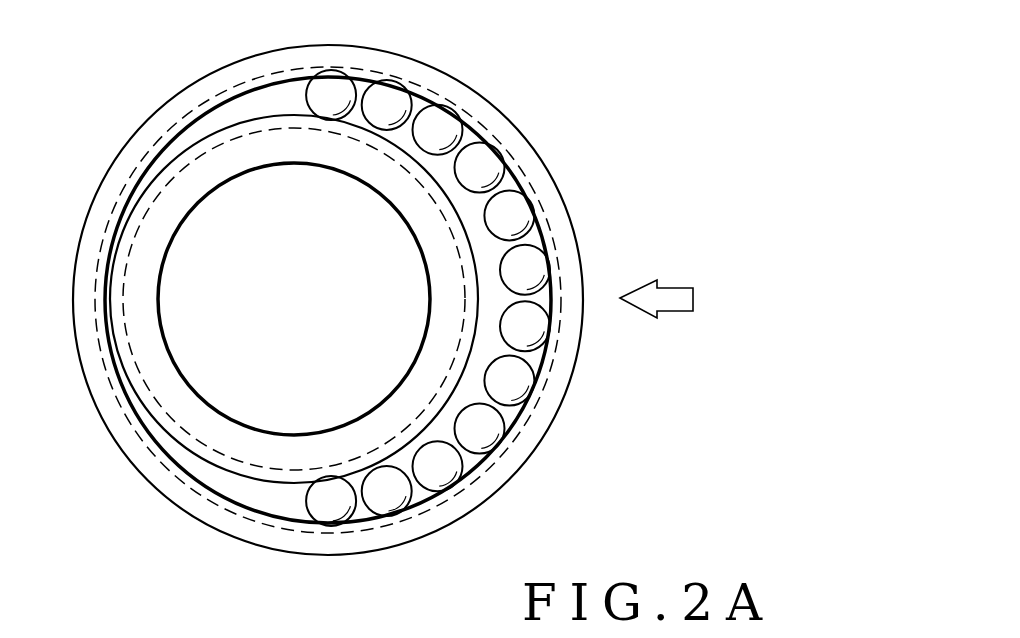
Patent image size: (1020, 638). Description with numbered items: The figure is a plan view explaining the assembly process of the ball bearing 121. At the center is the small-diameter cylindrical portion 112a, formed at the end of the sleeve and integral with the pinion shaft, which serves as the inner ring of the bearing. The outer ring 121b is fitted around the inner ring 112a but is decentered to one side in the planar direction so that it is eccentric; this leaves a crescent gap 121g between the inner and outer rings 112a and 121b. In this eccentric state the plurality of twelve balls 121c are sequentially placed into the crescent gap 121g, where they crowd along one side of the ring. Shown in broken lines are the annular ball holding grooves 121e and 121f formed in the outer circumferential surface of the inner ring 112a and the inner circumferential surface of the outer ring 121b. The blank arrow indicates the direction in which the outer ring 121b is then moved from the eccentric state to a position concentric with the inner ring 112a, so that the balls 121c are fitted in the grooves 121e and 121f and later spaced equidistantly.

The ball bearing 121 is at (404, 284).
The outer ring 121b is at (472, 97).
The balls 121c is at (518, 212).
The annular ball holding groove 121e is at (440, 400).
The annular ball holding groove 121f is at (530, 405).
The crescent gap 121g is at (493, 340).
The small-diameter cylindrical portion 112a is at (207, 167).